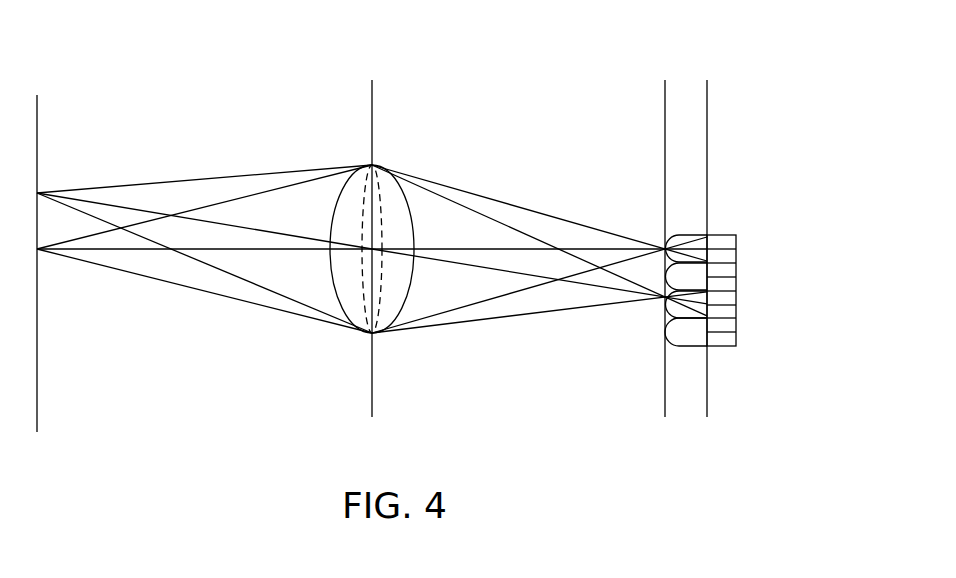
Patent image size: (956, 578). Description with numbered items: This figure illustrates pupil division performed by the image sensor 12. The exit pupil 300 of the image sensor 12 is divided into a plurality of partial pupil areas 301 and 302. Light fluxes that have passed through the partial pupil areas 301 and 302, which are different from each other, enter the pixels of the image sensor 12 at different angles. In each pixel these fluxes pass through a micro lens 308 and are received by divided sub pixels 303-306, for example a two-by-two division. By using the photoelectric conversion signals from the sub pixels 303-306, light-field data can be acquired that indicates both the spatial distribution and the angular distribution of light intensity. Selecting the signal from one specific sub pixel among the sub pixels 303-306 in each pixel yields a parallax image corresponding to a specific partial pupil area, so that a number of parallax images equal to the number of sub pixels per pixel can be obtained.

The image sensor 12 is at (678, 81).
The exit pupil 300 is at (342, 312).
The partial pupil area 301 is at (375, 330).
The partial pupil area 302 is at (387, 217).
The sub pixels 303-306 is at (736, 238).
The micro lens 308 is at (680, 237).